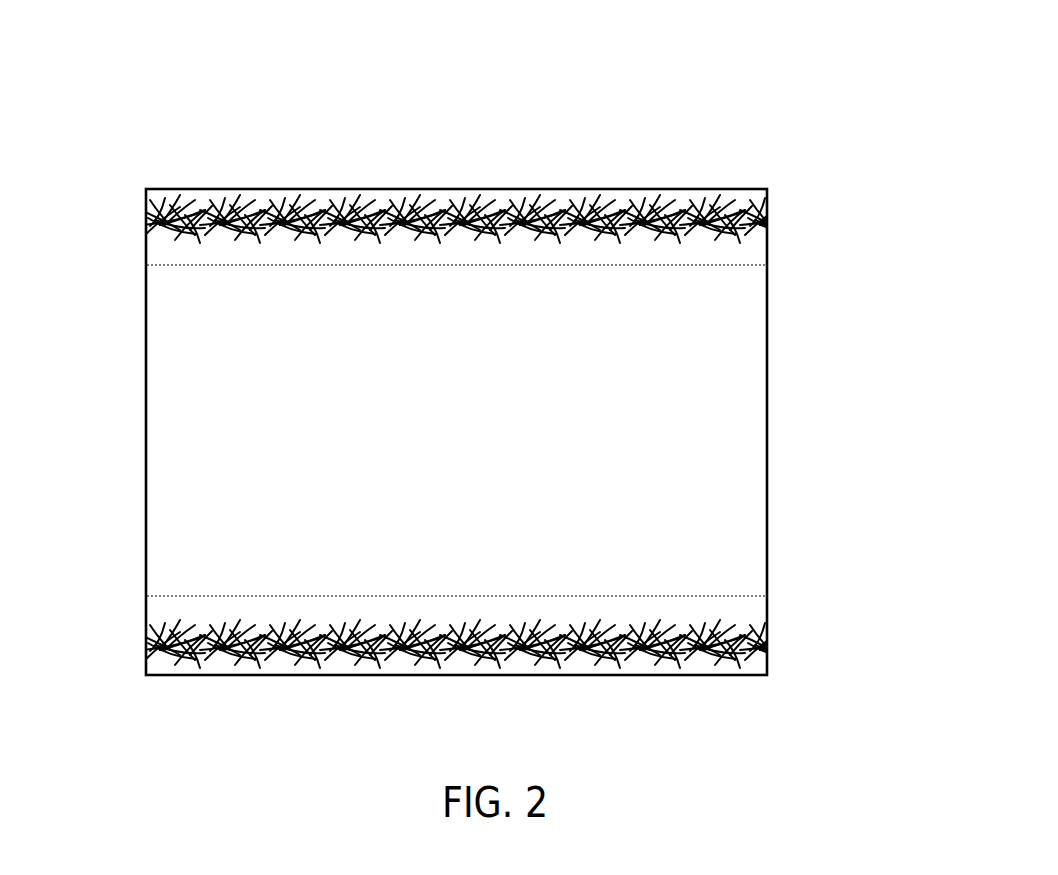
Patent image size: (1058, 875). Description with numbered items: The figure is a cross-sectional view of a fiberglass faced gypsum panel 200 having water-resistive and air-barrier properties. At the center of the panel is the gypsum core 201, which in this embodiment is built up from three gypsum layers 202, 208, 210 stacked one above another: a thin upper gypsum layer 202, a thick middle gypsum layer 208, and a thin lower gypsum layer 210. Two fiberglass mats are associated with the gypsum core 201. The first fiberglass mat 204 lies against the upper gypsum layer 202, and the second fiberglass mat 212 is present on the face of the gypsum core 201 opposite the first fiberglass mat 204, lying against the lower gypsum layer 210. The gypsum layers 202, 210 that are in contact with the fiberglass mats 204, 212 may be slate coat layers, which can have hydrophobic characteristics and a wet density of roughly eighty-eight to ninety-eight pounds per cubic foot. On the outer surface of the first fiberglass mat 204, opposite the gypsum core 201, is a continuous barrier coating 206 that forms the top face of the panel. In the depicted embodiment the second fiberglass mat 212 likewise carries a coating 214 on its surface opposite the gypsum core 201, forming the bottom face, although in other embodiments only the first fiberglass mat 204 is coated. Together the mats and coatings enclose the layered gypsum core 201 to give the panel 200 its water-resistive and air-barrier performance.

The gypsum panel 200 is at (497, 86).
The gypsum core 201 is at (130, 212).
The gypsum layer 202 is at (753, 257).
The first fiberglass mat 204 is at (758, 220).
The continuous barrier coating 206 is at (687, 183).
The gypsum layer 208 is at (748, 450).
The gypsum layer 210 is at (747, 618).
The second fiberglass mat 212 is at (755, 642).
The coating 214 is at (717, 675).